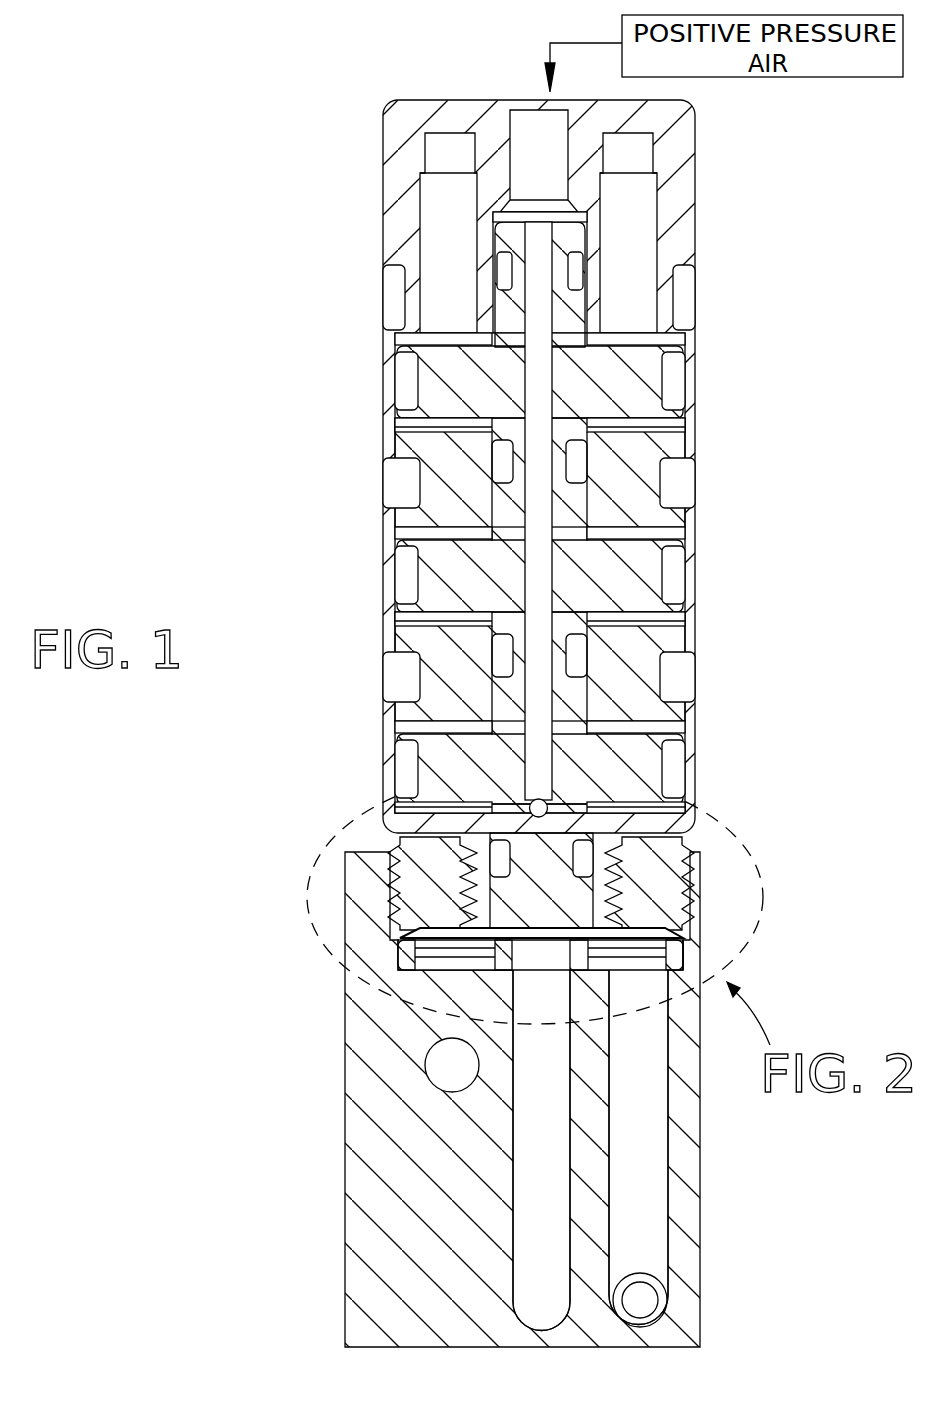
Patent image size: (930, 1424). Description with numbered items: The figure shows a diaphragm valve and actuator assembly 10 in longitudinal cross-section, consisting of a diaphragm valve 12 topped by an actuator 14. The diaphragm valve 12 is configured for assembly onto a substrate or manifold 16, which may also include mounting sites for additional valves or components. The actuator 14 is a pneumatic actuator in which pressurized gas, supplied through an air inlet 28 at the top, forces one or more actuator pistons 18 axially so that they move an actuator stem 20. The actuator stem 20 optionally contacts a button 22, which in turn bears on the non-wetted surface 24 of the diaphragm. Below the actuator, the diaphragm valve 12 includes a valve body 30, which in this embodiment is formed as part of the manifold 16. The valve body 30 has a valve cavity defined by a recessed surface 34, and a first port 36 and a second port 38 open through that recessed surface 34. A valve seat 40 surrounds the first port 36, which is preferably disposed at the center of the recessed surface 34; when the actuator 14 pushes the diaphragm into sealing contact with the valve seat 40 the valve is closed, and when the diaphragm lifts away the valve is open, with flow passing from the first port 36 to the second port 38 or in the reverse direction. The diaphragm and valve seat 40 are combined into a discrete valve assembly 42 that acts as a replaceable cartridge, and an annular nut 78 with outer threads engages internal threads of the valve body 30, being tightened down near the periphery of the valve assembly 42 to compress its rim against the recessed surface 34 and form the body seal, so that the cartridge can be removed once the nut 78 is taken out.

The diaphragm valve and actuator assembly 10 is at (178, 273).
The diaphragm valve 12 is at (165, 822).
The actuator 14 is at (767, 121).
The manifold 16 is at (330, 1226).
The actuator piston 18 is at (652, 373).
The actuator stem 20 is at (552, 865).
The button 22 is at (580, 917).
The non-wetted surface 24 is at (437, 928).
The air inlet 28 is at (518, 110).
The valve body 30 is at (700, 942).
The recessed surface 34 is at (445, 968).
The first port 36 is at (541, 970).
The second port 38 is at (640, 968).
The valve seat 40 is at (502, 985).
The valve assembly 42 is at (370, 963).
The annular nut 78 is at (417, 848).